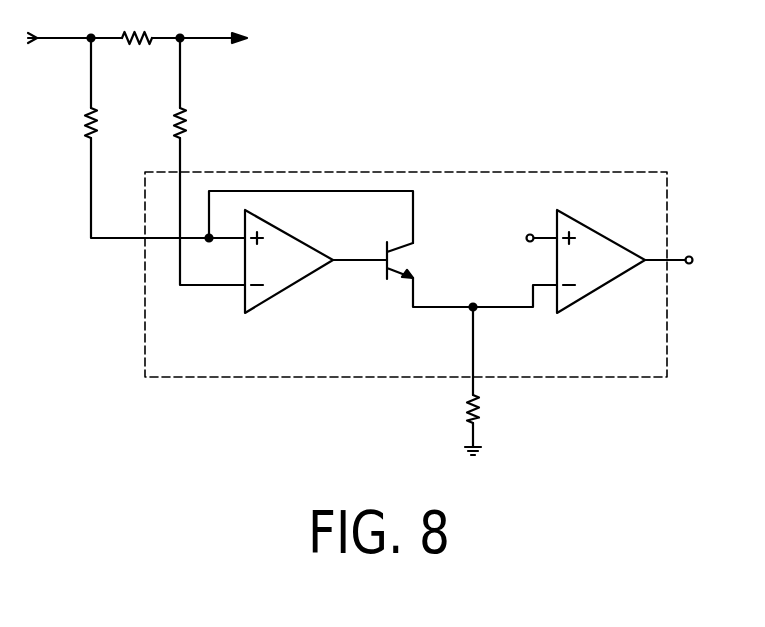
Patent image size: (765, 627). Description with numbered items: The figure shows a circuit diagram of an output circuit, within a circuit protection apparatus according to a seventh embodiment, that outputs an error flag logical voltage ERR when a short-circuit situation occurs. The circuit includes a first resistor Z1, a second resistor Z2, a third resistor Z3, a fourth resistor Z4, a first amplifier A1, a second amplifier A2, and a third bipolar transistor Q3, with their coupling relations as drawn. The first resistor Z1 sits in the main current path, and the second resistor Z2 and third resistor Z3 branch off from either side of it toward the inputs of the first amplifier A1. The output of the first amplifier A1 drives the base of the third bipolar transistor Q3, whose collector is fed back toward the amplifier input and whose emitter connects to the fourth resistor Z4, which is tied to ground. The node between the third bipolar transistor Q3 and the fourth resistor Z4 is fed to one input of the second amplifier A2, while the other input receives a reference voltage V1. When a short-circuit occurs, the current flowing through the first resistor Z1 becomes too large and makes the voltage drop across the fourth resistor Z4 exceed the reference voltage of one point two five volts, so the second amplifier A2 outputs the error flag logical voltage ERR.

The first resistor Z1 is at (137, 22).
The second resistor Z2 is at (106, 124).
The third resistor Z3 is at (196, 124).
The fourth resistor Z4 is at (488, 407).
The third bipolar transistor Q3 is at (392, 246).
The first amplifier A1 is at (290, 287).
The second amplifier A2 is at (602, 288).
The reference voltage V1 is at (526, 238).
The error flag logical voltage ERR is at (692, 262).